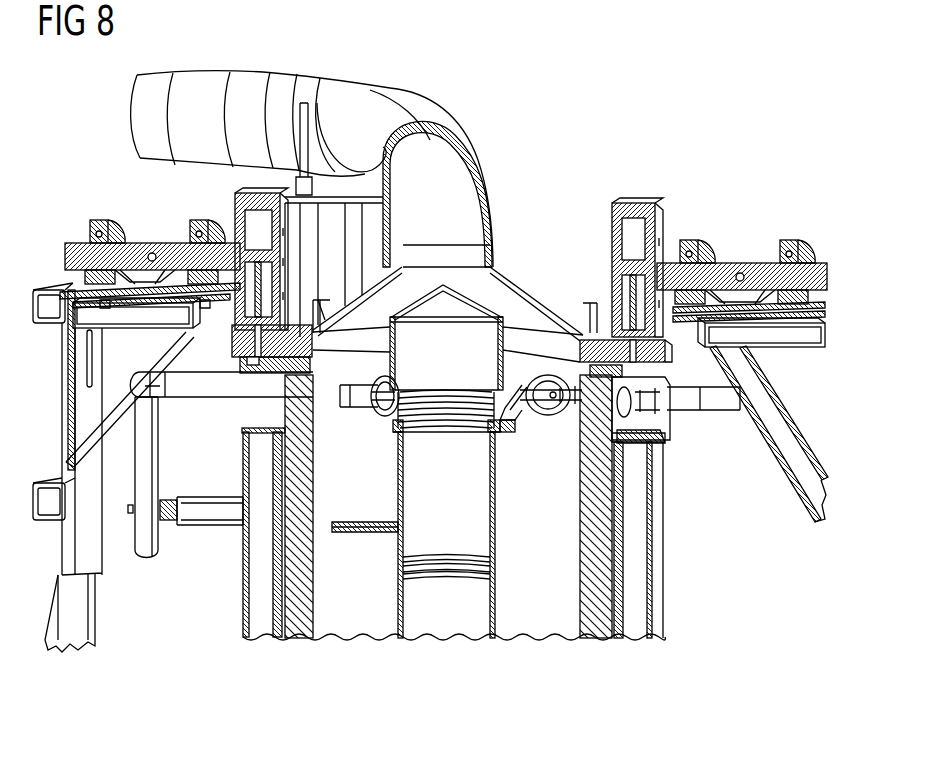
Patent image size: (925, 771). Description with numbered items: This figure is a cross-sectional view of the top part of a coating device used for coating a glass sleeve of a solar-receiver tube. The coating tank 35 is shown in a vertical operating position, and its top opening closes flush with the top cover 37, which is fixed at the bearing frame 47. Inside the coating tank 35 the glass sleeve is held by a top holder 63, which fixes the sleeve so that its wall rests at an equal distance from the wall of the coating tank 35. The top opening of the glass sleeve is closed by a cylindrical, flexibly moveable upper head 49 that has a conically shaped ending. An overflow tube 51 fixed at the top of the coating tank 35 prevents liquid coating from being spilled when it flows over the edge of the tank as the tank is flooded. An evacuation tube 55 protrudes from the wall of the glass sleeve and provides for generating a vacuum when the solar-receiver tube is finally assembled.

The coating tank 35 is at (597, 632).
The top cover 37 is at (495, 290).
The bearing frame 47 is at (788, 440).
The upper head 49 is at (492, 342).
The overflow tube 51 is at (303, 387).
The evacuation tube 55 is at (358, 530).
The top holder 63 is at (520, 410).